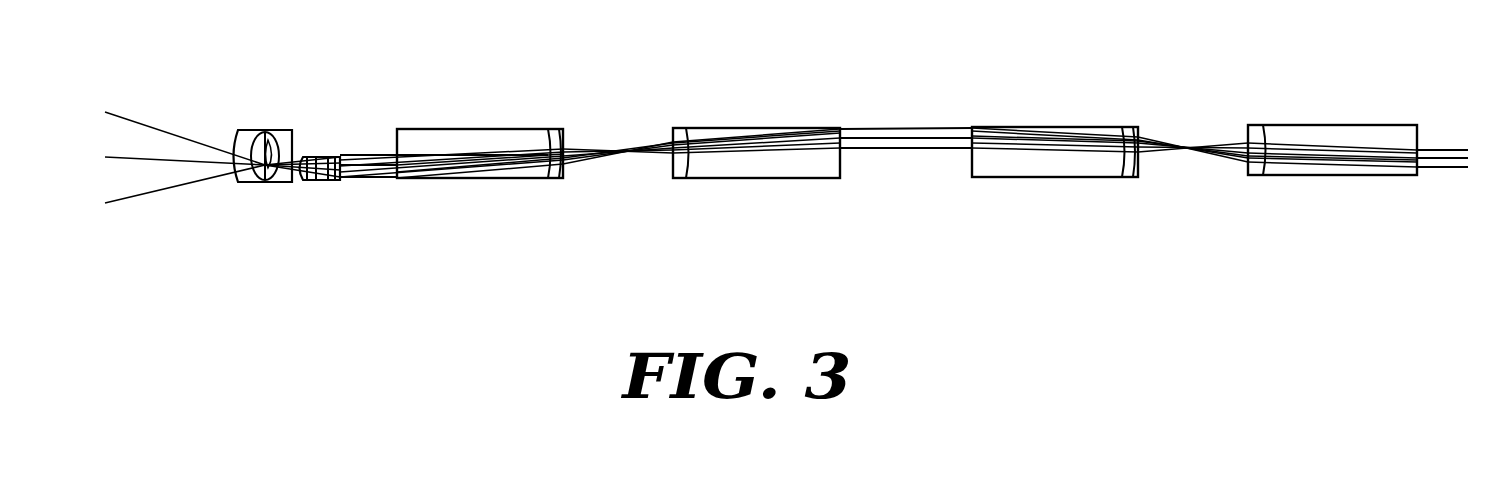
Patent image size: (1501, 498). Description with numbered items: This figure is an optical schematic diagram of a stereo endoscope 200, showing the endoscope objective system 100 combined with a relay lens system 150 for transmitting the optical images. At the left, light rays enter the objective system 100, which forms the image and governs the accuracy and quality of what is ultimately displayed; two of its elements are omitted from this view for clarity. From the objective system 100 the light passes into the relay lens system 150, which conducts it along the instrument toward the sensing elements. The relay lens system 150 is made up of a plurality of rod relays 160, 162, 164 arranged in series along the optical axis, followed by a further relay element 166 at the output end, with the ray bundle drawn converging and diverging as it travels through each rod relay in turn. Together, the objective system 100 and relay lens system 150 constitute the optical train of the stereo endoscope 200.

The endoscope objective system 100 is at (218, 81).
The relay lens system 150 is at (1422, 77).
The rod relay 160 is at (463, 128).
The rod relay 162 is at (742, 128).
The rod relay 164 is at (1080, 127).
The fourth relay lens 166 is at (1290, 124).
The stereo endoscope 200 is at (1426, 225).